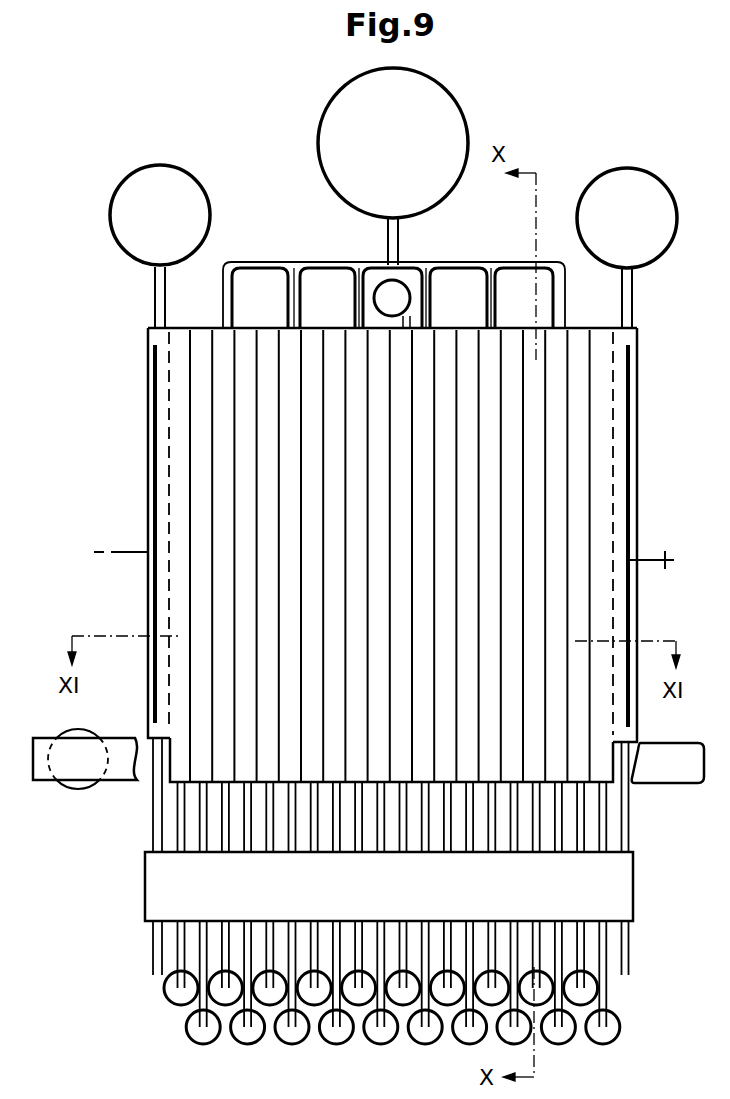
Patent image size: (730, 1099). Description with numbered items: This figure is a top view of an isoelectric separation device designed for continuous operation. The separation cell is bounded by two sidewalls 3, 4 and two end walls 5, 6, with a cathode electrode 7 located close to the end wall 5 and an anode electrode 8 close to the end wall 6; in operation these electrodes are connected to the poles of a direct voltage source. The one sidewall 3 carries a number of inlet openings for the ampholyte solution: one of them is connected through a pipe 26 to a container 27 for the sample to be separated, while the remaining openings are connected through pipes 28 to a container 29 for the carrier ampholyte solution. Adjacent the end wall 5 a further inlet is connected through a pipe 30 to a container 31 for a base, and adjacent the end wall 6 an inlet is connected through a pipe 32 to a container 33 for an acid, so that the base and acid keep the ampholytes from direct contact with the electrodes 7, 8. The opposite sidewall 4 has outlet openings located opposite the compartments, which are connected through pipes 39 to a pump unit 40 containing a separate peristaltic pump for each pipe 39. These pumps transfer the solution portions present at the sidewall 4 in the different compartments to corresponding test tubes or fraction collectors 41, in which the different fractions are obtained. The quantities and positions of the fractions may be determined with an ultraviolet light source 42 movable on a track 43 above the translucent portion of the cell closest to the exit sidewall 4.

The sidewall 3 is at (243, 328).
The sidewall 4 is at (592, 786).
The end wall 5 is at (148, 506).
The end wall 6 is at (637, 500).
The electrode 7 is at (148, 578).
The electrode 8 is at (637, 615).
The pipe 26 is at (418, 326).
The container 27 is at (375, 303).
The pipes 28 is at (403, 268).
The container 29 is at (447, 180).
The pipe 30 is at (167, 313).
The container 31 is at (196, 229).
The pipe 32 is at (634, 310).
The container 33 is at (663, 231).
The pipes 39 is at (195, 840).
The pump unit 40 is at (633, 890).
The test tubes 41 is at (248, 1042).
The ultraviolet light source 42 is at (83, 731).
The track 43 is at (45, 777).